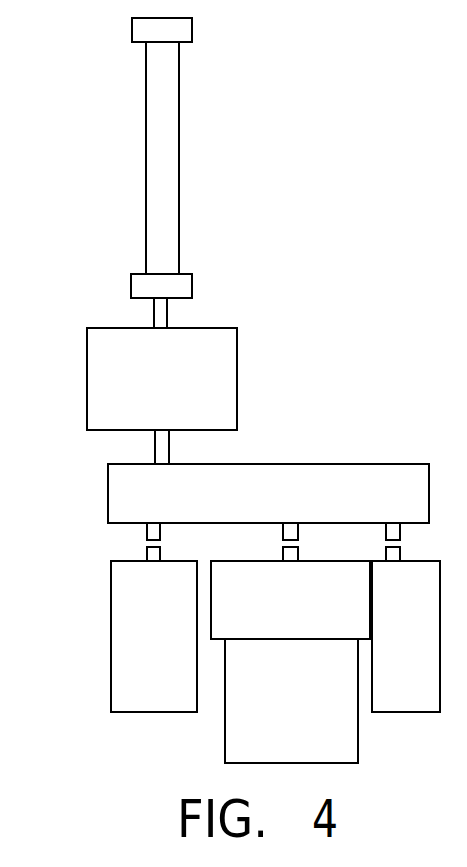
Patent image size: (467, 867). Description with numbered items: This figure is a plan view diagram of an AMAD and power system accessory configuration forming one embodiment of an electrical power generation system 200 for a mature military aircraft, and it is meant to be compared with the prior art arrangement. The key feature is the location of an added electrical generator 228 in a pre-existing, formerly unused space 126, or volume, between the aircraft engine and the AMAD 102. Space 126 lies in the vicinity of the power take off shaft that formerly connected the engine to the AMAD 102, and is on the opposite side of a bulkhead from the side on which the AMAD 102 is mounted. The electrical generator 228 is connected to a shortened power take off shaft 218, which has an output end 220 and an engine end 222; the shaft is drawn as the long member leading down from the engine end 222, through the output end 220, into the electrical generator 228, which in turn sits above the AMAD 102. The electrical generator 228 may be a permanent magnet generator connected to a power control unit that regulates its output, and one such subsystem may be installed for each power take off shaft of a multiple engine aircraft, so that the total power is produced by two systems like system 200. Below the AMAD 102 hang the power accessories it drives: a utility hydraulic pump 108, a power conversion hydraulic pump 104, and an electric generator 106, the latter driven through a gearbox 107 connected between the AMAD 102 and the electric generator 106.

The electrical power generation system 200 is at (233, 111).
The engine end 222 is at (143, 33).
The shortened power take off shaft 218 is at (153, 160).
The output end 220 is at (140, 287).
The electrical generator 228 is at (187, 426).
The AMAD 102 is at (183, 511).
The utility hydraulic pump 108 is at (175, 609).
The gearbox 107 is at (313, 611).
The power conversion hydraulic pump 104 is at (425, 609).
The electric generator 106 is at (312, 749).
The space 126 is at (310, 176).